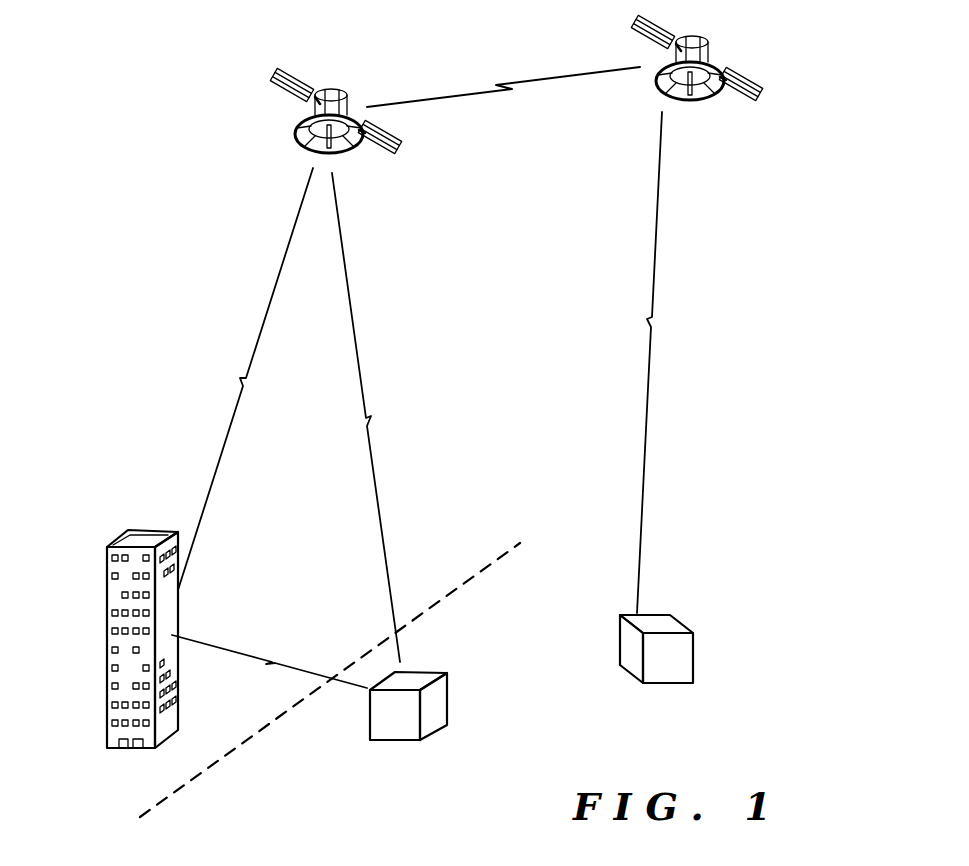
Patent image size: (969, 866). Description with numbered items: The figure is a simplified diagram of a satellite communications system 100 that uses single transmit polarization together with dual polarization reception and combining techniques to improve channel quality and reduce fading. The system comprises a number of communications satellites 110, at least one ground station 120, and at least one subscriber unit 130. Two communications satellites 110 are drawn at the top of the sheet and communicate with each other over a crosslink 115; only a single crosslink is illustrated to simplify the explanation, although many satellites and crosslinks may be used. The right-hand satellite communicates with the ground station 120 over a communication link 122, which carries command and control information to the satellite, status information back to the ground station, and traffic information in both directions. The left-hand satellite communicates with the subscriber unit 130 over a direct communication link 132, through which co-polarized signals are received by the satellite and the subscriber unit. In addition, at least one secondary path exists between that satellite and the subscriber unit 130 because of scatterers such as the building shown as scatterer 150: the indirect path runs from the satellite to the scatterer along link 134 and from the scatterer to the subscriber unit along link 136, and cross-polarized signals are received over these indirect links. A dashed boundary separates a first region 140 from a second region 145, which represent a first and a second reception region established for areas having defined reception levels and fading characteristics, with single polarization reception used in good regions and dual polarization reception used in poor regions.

The satellite communications system 100 is at (447, 416).
The communications satellite 110 is at (297, 130).
The crosslink 115 is at (478, 97).
The ground station 120 is at (668, 684).
The communication link 122 is at (656, 218).
The subscriber unit 130 is at (395, 741).
The communication link 132 is at (353, 333).
The secondary path 134 is at (258, 323).
The secondary path 136 is at (295, 664).
The first region 140 is at (150, 801).
The second region 145 is at (248, 801).
The scatterer 150 is at (157, 530).